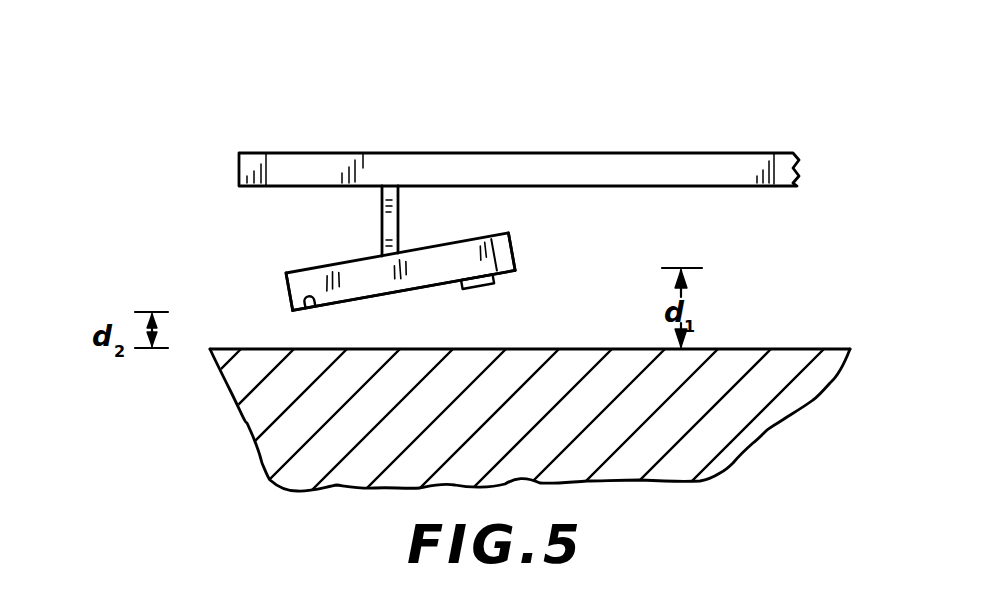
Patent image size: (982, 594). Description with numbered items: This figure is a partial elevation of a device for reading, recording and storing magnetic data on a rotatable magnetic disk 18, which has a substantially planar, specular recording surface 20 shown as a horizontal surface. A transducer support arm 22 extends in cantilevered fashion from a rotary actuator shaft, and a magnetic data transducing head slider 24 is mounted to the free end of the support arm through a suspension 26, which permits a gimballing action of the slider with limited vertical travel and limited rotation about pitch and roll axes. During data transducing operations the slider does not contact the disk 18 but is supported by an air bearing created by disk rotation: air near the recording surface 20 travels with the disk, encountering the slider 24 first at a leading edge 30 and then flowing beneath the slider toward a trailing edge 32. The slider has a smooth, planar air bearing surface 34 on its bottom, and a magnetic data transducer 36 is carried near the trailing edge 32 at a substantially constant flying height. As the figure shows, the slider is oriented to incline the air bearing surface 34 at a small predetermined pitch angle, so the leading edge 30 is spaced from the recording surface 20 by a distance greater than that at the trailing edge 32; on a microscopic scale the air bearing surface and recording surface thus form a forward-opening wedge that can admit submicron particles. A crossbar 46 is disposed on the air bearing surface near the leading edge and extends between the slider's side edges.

The rotatable magnetic disk 18 is at (280, 433).
The recording surface 20 is at (792, 349).
The transducer support arm 22 is at (633, 168).
The magnetic data transducing head slider 24 is at (367, 283).
The suspension 26 is at (383, 221).
The leading edge 30 is at (515, 252).
The trailing edge 32 is at (285, 283).
The air bearing surface 34 is at (437, 287).
The magnetic data transducer 36 is at (293, 305).
The crossbar 46 is at (476, 288).